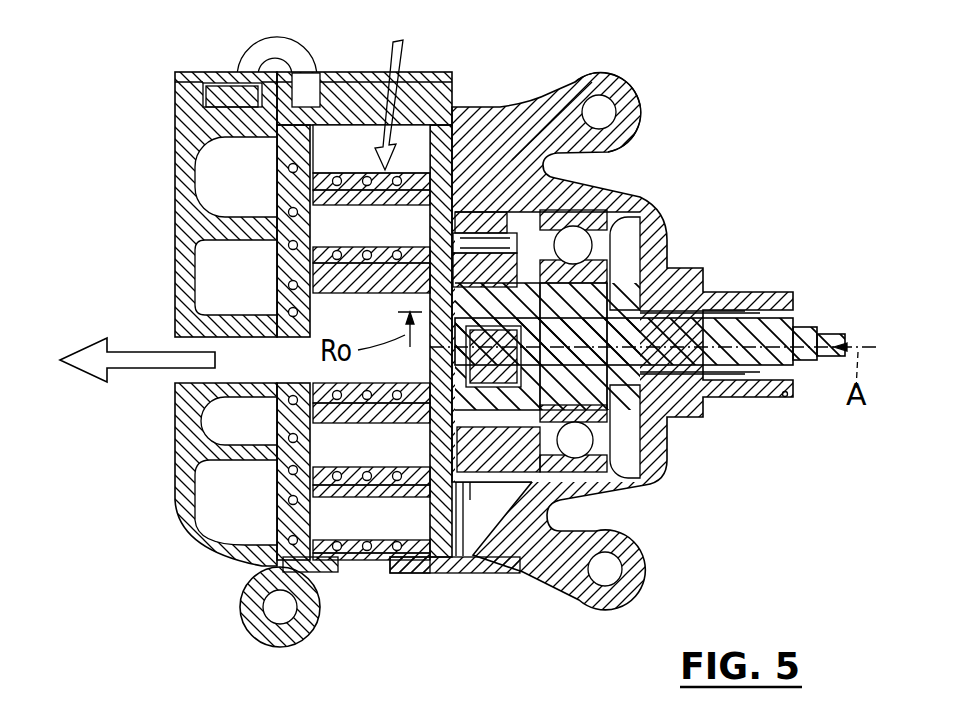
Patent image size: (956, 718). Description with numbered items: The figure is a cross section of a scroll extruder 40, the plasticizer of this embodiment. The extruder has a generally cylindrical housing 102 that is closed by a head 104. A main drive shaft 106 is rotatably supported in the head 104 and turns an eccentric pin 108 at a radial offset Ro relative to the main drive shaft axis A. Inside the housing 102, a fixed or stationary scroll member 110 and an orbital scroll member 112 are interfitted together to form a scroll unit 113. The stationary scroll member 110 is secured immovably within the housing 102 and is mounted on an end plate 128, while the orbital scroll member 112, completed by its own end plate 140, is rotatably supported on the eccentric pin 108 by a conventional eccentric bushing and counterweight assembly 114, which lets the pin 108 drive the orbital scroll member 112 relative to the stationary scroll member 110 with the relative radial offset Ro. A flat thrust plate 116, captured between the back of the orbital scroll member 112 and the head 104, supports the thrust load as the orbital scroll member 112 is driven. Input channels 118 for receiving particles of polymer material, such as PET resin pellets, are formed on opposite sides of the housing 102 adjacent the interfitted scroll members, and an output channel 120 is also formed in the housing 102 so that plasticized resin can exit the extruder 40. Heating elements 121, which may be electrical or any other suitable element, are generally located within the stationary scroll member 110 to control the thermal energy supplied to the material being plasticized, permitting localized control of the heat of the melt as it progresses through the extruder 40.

The scroll extruder 40 is at (676, 129).
The housing 102 is at (176, 109).
The head 104 is at (658, 201).
The main drive shaft 106 is at (798, 335).
The eccentric pin 108 is at (470, 300).
The stationary scroll member 110 is at (274, 497).
The orbital scroll member 112 is at (446, 518).
The scroll unit 113 is at (460, 478).
The eccentric bushing and counterweight assembly 114 is at (458, 380).
The thrust plate 116 is at (462, 570).
The input channels 118 is at (407, 90).
The output channel 120 is at (190, 350).
The heating elements 121 is at (362, 175).
The end plate 128 is at (287, 482).
The end plate 140 is at (427, 560).